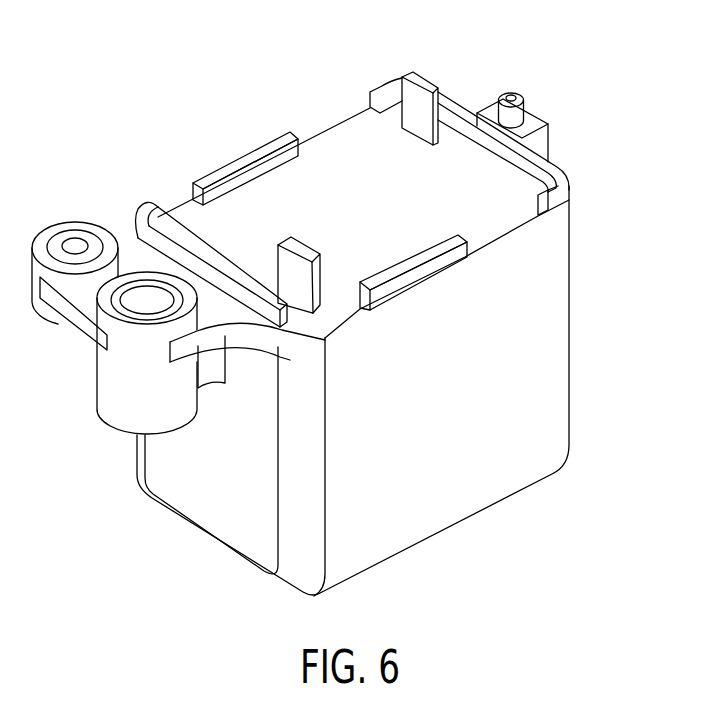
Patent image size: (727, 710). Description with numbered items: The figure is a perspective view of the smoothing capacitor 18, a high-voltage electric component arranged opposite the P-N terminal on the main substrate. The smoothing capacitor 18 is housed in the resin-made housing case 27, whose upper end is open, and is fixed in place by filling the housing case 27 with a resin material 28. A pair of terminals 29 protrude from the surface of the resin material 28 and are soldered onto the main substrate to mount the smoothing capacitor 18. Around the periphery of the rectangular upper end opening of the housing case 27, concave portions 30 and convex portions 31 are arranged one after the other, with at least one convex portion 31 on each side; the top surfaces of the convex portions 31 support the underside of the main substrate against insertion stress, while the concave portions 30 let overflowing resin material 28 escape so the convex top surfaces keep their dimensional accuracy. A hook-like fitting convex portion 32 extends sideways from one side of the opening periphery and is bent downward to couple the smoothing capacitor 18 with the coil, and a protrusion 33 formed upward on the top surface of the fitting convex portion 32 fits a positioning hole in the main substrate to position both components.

The smoothing capacitor 18 is at (482, 521).
The housing case 27 is at (217, 505).
The resin material 28 is at (343, 163).
The terminals 29 is at (424, 98).
The concave portions 30 is at (513, 227).
The convex portions 31 is at (243, 158).
The fitting convex portion 32 is at (545, 142).
The protrusion 33 is at (507, 93).